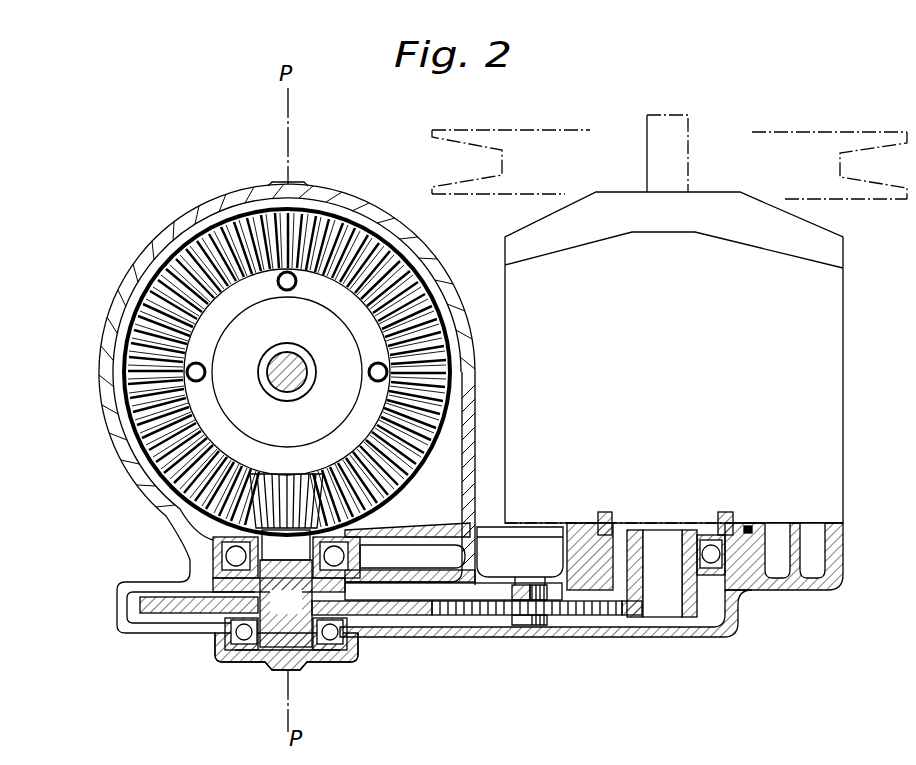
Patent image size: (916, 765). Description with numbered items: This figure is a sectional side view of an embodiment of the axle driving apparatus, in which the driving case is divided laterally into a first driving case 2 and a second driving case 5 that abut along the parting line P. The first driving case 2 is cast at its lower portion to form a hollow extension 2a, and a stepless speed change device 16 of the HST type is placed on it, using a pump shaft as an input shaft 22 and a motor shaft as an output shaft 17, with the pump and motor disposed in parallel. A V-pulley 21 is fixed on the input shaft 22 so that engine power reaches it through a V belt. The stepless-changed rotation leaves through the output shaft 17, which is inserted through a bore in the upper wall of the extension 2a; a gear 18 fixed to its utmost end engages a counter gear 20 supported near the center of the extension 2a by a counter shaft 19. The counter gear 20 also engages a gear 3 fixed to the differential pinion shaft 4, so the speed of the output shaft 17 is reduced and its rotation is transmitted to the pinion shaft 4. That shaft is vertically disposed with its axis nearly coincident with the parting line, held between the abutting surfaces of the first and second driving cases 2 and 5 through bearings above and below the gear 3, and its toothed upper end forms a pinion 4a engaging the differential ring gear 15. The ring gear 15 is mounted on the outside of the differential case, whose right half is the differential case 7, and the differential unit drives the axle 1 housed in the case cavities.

The axle 1 is at (306, 370).
The first driving case 2 is at (452, 298).
The hollow extension 2a is at (570, 638).
The gear 3 is at (477, 645).
The differential pinion shaft 4 is at (295, 614).
The pinion 4a is at (290, 480).
The second driving case 5 is at (150, 245).
The differential case 7 is at (332, 405).
The differential ring gear 15 is at (405, 484).
The stepless speed change device 16 is at (845, 435).
The output shaft 17 is at (674, 598).
The gear 18 is at (703, 615).
The counter shaft 19 is at (527, 598).
The counter gear 20 is at (522, 618).
The V-pulley 21 is at (450, 185).
The input shaft 22 is at (652, 118).